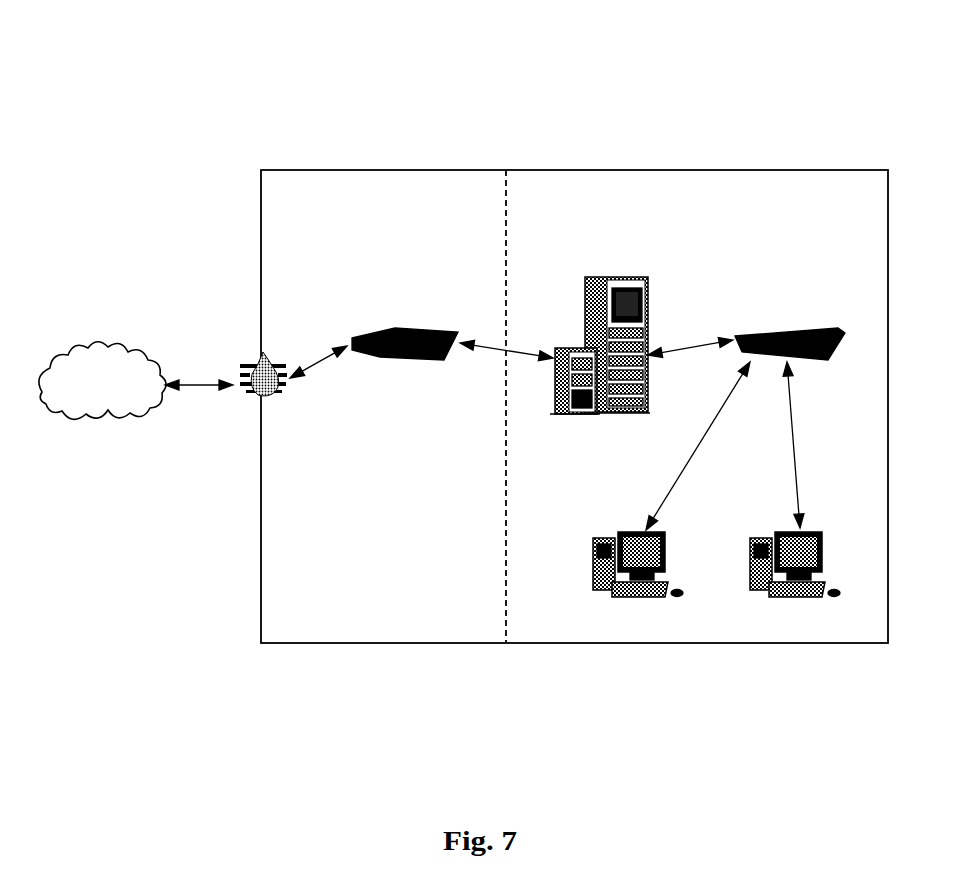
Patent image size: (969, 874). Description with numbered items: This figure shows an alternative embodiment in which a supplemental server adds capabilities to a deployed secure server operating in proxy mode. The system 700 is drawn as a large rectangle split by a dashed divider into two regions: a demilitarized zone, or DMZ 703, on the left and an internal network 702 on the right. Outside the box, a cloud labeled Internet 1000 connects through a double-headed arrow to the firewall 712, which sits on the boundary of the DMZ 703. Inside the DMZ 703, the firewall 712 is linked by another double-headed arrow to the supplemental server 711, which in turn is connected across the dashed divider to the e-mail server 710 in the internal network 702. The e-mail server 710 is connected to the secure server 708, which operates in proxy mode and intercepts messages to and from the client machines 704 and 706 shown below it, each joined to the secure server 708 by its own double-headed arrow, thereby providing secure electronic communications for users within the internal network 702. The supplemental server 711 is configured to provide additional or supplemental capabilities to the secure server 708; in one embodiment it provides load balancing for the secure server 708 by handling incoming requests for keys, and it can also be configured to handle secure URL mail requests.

The system 700 is at (205, 42).
The internal network 702 is at (657, 170).
The demilitarized zone (DMZ) 703 is at (375, 170).
The client machine 704 is at (668, 554).
The client machine 706 is at (823, 555).
The secure server 708 is at (787, 330).
The e-mail server 710 is at (645, 322).
The supplemental server 711 is at (425, 330).
The firewall 712 is at (268, 362).
The Internet 1000 is at (108, 343).